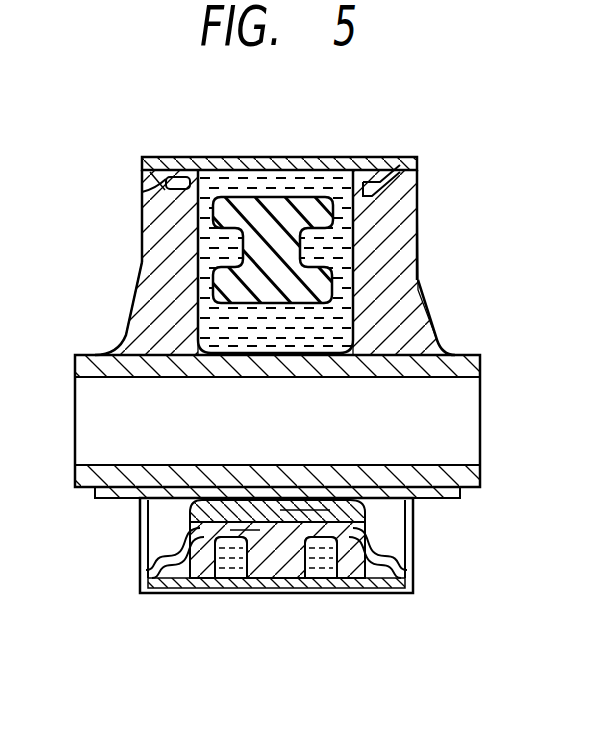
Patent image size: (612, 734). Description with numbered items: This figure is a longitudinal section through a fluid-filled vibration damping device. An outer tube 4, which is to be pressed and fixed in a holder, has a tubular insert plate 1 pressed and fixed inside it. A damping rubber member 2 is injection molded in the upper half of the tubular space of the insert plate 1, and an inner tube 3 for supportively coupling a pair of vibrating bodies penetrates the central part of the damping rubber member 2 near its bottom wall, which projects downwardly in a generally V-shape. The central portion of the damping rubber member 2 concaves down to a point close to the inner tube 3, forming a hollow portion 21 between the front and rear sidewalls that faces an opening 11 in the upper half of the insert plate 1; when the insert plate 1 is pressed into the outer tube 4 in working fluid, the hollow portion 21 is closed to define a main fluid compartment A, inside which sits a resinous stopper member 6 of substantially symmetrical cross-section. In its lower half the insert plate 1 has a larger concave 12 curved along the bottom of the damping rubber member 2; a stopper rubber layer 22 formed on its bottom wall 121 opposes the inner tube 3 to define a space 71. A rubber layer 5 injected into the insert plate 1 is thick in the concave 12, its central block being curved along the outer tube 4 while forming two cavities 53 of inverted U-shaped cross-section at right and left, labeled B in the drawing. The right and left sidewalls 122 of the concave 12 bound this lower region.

The tubular insert plate 1 is at (375, 193).
The opening 11 is at (200, 178).
The hollow portion 21 is at (345, 195).
The outer tube 4 is at (222, 170).
The main fluid compartment A is at (276, 178).
The resinous stopper member 6 is at (258, 256).
The damping rubber member 2 is at (400, 292).
The inner tube 3 is at (468, 358).
The rubber layer 5 is at (278, 575).
The stopper rubber layer 22 is at (200, 505).
The concave 12 is at (352, 512).
The space 71 is at (300, 520).
The bottom wall 121 is at (240, 540).
The cavities 53 is at (224, 578).
The stopper chamber B is at (232, 565).
The right and left sidewalls 122 is at (185, 555).